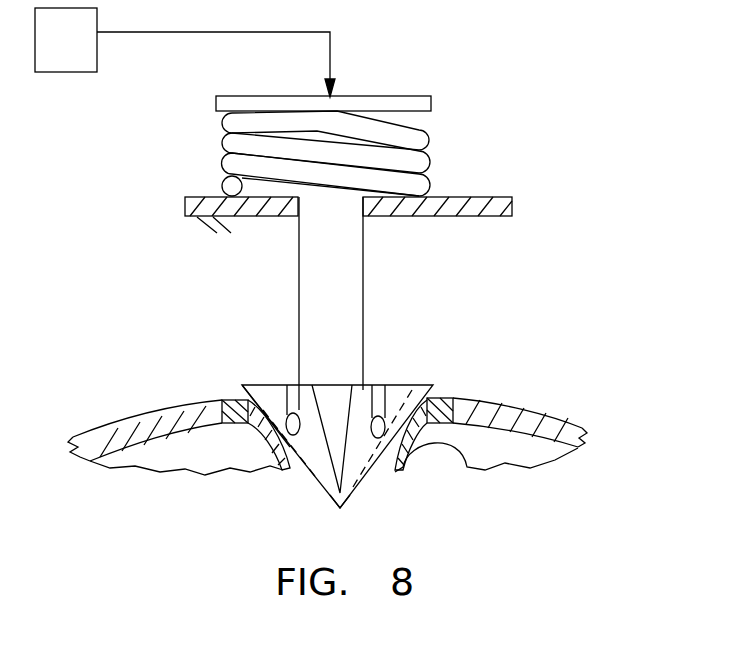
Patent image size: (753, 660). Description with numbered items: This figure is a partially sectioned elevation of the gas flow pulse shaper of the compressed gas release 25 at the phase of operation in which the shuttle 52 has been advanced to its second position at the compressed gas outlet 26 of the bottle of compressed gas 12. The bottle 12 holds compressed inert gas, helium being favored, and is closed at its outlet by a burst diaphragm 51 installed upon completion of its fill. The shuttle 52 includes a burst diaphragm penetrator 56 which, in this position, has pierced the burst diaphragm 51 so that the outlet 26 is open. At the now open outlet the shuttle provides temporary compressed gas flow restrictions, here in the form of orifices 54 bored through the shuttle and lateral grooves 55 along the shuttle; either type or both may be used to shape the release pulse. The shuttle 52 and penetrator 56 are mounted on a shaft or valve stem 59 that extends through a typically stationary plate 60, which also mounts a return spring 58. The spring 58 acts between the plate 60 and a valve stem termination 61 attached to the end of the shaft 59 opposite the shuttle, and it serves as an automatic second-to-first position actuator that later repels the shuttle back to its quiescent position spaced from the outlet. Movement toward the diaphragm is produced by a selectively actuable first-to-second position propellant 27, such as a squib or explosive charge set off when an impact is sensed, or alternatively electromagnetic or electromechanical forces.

The bottle of compressed gas 12 is at (540, 412).
The compressed gas release 25 is at (470, 70).
The compressed gas outlet 26 is at (435, 397).
The first-to-second position propellant 27 is at (88, 58).
The burst diaphragm 51 is at (467, 470).
The shuttle 52 is at (272, 385).
The orifices 54 is at (313, 385).
The lateral grooves 55 is at (257, 387).
The burst diaphragm penetrator 56 is at (335, 508).
The return spring 58 is at (432, 130).
The shaft 59 is at (299, 232).
The stationary plate 60 is at (200, 197).
The valve stem termination 61 is at (248, 95).